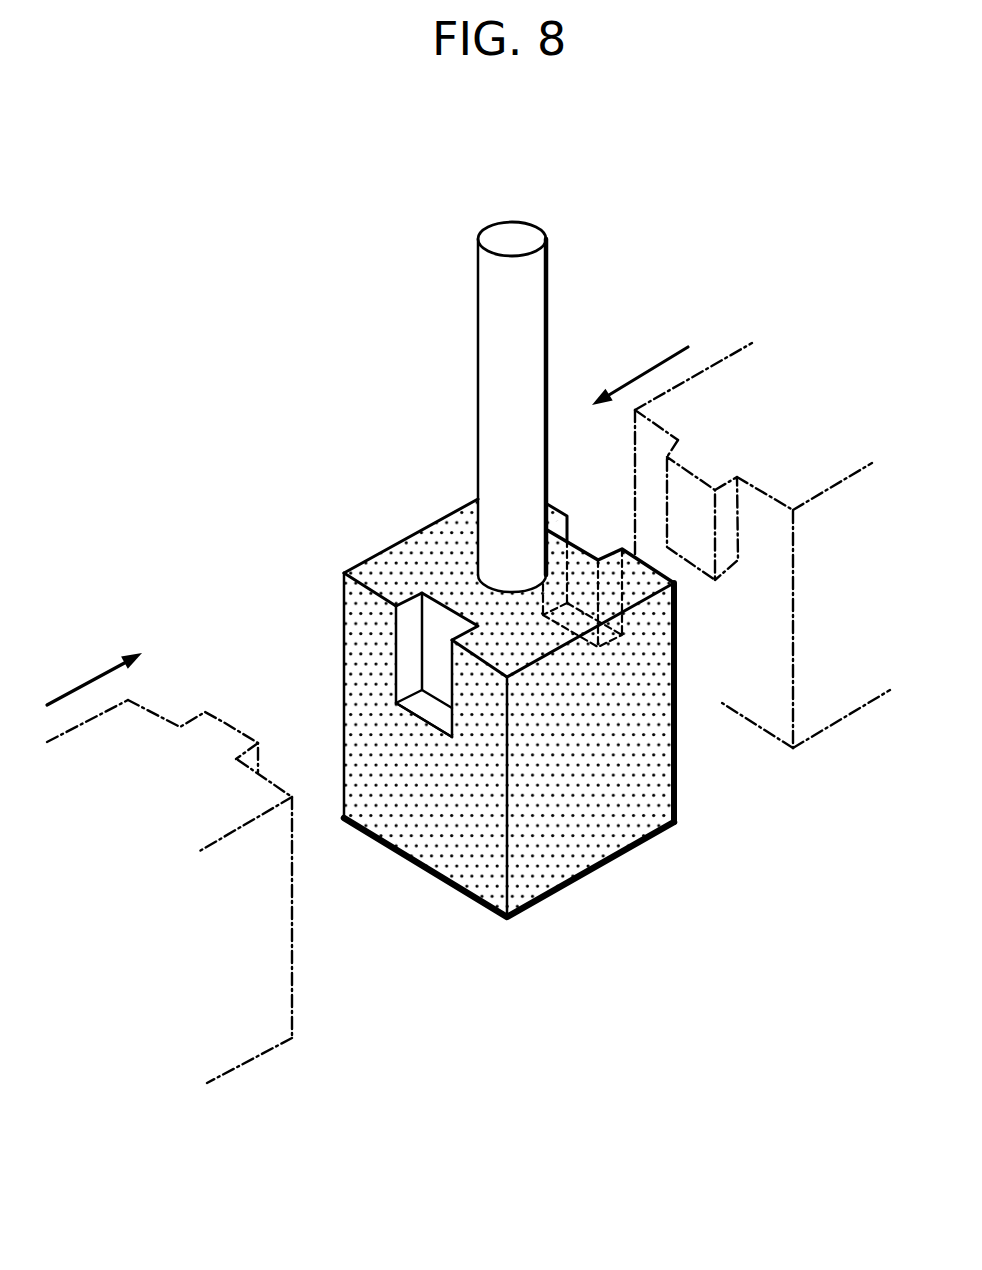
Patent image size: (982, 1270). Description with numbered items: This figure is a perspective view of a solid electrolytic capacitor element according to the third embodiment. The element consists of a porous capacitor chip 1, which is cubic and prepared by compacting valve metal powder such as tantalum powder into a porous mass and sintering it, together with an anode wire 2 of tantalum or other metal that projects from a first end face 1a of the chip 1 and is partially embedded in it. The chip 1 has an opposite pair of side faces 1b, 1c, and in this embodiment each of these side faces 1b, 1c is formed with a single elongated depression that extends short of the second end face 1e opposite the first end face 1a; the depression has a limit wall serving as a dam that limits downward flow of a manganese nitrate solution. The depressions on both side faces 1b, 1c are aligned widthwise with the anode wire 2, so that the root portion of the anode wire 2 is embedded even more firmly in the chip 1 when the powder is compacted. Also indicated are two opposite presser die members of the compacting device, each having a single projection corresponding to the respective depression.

The capacitor chip 1 is at (521, 631).
The first end face 1a is at (400, 573).
The side face 1b is at (448, 884).
The side face 1c is at (678, 762).
The second end face 1e is at (597, 866).
The anode wire 2 is at (500, 332).